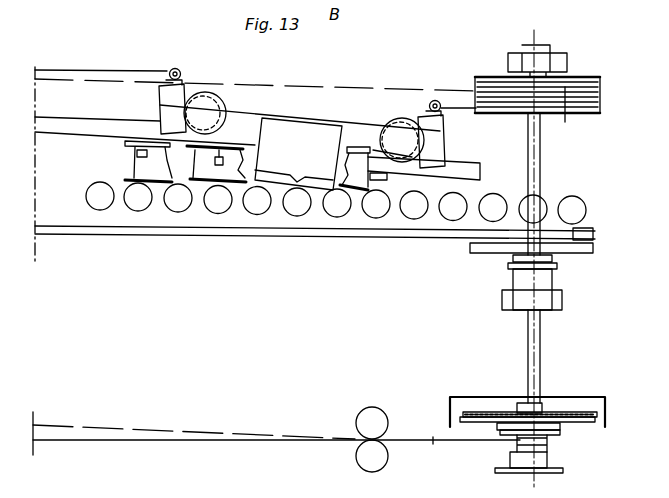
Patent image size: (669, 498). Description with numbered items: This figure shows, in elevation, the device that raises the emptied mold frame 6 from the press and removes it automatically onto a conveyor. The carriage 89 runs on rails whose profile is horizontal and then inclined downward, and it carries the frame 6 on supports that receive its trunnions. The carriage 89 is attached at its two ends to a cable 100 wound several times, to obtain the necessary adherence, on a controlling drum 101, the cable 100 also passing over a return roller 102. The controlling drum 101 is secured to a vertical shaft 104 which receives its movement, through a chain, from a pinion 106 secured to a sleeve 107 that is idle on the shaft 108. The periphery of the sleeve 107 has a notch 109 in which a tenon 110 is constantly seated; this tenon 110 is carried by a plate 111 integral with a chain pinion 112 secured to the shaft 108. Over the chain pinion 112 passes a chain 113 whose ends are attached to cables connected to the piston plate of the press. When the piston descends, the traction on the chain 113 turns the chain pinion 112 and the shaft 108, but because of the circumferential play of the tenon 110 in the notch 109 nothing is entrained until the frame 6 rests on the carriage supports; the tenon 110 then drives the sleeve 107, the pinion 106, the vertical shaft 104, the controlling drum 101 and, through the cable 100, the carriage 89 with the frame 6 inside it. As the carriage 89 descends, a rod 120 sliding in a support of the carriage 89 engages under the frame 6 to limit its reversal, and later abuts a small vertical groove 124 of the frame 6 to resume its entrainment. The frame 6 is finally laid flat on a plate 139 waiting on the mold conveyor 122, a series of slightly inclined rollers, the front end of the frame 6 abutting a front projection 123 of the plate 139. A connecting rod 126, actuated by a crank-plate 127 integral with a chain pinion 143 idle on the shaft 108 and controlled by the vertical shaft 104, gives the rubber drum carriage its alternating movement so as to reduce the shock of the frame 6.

The mold frame 6 is at (237, 174).
The carriage 89 is at (248, 122).
The cable 100 is at (317, 87).
The controlling drum 101 is at (487, 76).
The return roller 102 is at (583, 110).
The vertical shaft 104 is at (541, 159).
The pinion 106 is at (472, 409).
The sleeve 107 is at (560, 426).
The shaft 108 is at (537, 343).
The notch 109 is at (538, 425).
The tenon 110 is at (523, 424).
The plate 111 is at (497, 428).
The chain pinion 112 is at (547, 444).
The chain 113 is at (443, 445).
The rod 120 is at (138, 153).
The mold conveyor 122 is at (298, 209).
The front projection 123 is at (386, 181).
The vertical groove 124 is at (298, 190).
The connecting rod 126 is at (150, 236).
The crank-plate 127 is at (472, 248).
The plate 139 is at (357, 186).
The chain pinion 143 is at (557, 267).